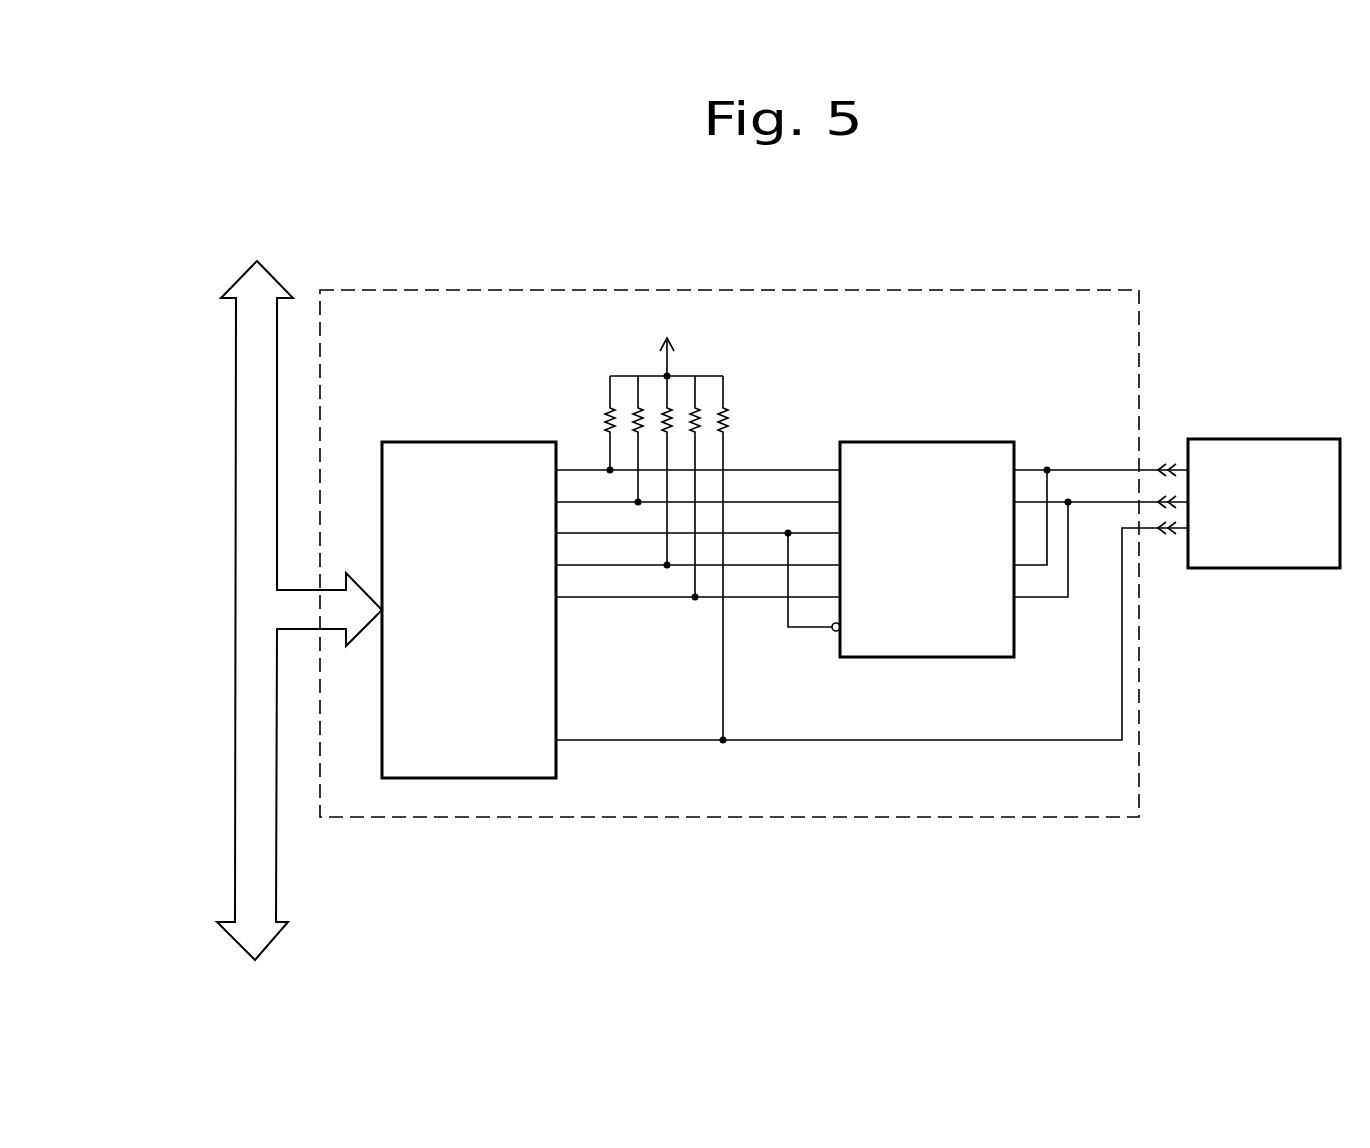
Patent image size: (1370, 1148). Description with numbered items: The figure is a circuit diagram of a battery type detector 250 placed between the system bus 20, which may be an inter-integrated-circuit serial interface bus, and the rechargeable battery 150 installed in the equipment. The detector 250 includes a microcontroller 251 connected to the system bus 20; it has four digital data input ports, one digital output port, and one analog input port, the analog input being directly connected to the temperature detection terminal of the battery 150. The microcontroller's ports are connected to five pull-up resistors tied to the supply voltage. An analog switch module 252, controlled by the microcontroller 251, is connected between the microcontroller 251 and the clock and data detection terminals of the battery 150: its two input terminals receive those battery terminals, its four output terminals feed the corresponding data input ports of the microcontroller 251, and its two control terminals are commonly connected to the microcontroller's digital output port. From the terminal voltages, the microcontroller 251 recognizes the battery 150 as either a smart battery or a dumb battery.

The system bus 20 is at (257, 876).
The rechargeable battery 150 is at (1282, 439).
The battery type detector 250 is at (790, 817).
The microcontroller 251 is at (440, 442).
The analog switch module 252 is at (898, 442).